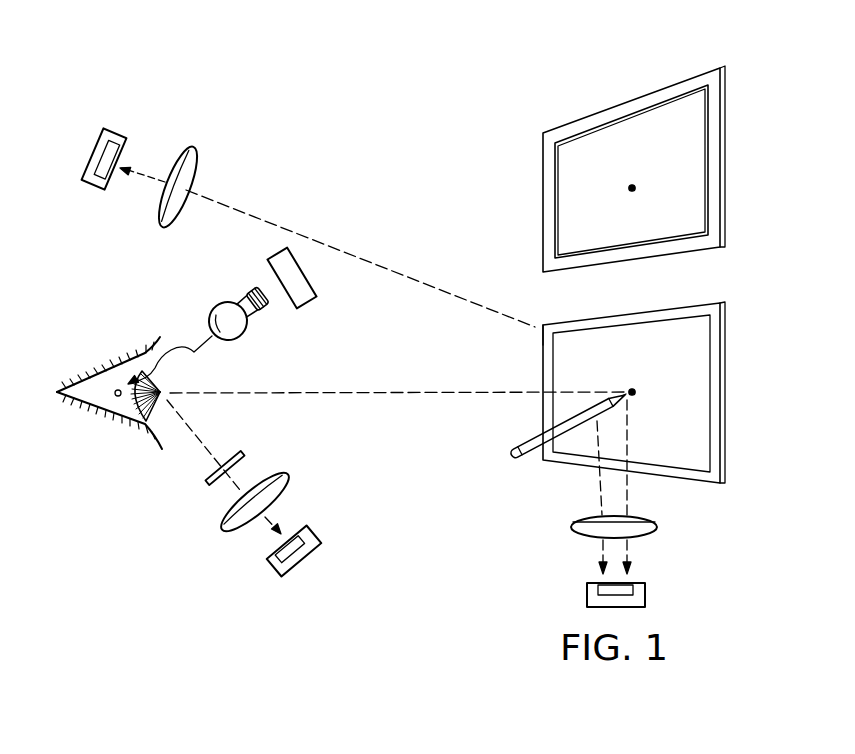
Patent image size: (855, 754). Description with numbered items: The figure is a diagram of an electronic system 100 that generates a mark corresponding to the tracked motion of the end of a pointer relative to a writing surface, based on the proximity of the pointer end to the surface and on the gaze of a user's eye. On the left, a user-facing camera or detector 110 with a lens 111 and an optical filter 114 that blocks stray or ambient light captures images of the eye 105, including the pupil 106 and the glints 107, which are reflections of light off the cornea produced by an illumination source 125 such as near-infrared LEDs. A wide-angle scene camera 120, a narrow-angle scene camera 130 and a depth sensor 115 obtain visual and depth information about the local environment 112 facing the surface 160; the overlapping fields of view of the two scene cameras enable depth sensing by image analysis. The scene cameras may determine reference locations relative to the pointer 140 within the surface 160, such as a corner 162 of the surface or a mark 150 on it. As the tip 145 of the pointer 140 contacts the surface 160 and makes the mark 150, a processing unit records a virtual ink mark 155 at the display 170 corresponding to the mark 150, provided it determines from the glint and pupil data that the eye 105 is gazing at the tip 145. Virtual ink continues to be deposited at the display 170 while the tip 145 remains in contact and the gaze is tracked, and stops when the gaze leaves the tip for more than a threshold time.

The electronic system 100 is at (203, 65).
The eye 105 is at (82, 405).
The pupil 106 is at (163, 386).
The glints 107 is at (114, 393).
The user-facing camera or detector 110 is at (267, 565).
The lens 111 is at (222, 530).
The local environment 112 is at (403, 249).
The optical filter 114 is at (207, 484).
The depth sensor 115 is at (307, 308).
The wide-angle scene camera 120 is at (93, 140).
The illumination source 125 is at (224, 302).
The narrow-angle scene camera 130 is at (645, 594).
The pointer 140 is at (530, 456).
The tip 145 is at (632, 397).
The mark 150 is at (632, 388).
The virtual ink mark 155 is at (632, 183).
The surface 160 is at (693, 380).
The corner 162 is at (540, 322).
The display 170 is at (725, 158).